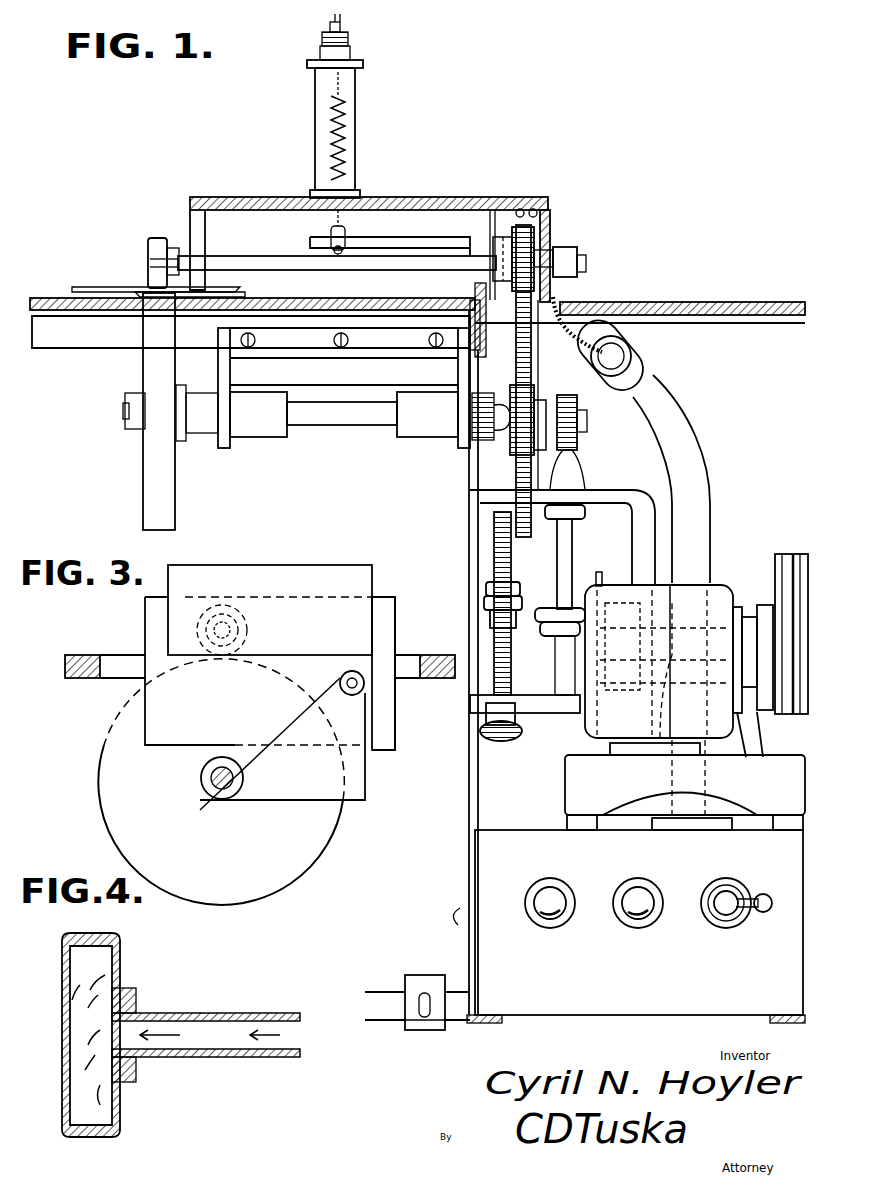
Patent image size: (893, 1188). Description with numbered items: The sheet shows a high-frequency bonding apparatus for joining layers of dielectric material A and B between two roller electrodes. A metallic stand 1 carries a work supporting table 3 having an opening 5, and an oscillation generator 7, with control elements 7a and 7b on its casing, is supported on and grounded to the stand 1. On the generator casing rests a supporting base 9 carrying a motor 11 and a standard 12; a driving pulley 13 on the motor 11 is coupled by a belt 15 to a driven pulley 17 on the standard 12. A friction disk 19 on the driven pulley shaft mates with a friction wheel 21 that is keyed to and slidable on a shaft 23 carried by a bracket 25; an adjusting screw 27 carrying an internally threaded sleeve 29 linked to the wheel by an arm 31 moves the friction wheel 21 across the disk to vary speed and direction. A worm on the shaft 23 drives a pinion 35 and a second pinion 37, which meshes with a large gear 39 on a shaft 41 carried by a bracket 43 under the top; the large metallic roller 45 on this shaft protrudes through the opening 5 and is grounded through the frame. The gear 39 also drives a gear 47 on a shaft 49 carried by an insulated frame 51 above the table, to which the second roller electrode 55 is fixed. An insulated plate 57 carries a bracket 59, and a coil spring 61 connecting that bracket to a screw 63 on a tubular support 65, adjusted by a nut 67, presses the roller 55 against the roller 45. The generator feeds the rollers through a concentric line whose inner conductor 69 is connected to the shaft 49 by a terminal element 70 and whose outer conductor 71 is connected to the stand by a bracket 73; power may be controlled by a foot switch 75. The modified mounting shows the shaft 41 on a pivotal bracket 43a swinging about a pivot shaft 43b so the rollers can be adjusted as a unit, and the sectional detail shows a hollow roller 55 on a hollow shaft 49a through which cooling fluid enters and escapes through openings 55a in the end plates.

In FIG. 1, the metallic stand 1 is at (470, 816).
In FIG. 3, the metallic stand 1 is at (388, 700).
In FIG. 1, the work supporting table 3 is at (38, 298).
In FIG. 3, the work supporting table 3 is at (75, 680).
In FIG. 1, the opening 5 is at (130, 328).
In FIG. 3, the opening 5 is at (118, 677).
In FIG. 1, the oscillation generator 7 is at (607, 1000).
In FIG. 1, the control element 7a is at (548, 928).
In FIG. 1, the control element 7b is at (636, 928).
In FIG. 1, the supporting base 9 is at (565, 798).
In FIG. 1, the motor 11 is at (610, 730).
In FIG. 1, the standard 12 is at (744, 752).
In FIG. 1, the driving pulley 13 is at (750, 722).
In FIG. 1, the belt 15 is at (793, 554).
In FIG. 1, the driven pulley 17 is at (776, 565).
In FIG. 1, the friction disk 19 is at (604, 573).
In FIG. 1, the friction wheel 21 is at (548, 640).
In FIG. 1, the shaft 23 is at (555, 573).
In FIG. 1, the bracket 25 is at (592, 498).
In FIG. 1, the adjusting screw 27 is at (503, 745).
In FIG. 1, the internally threaded sleeve 29 is at (484, 602).
In FIG. 1, the arm 31 is at (490, 570).
In FIG. 1, the pinion 35 is at (585, 418).
In FIG. 1, the second pinion 37 is at (513, 462).
In FIG. 1, the large gear 39 is at (527, 352).
In FIG. 1, the shaft 41 is at (333, 425).
In FIG. 3, the shaft 41 is at (213, 795).
In FIG. 1, the bracket 43 is at (228, 375).
In FIG. 3, the bracket 43a is at (360, 775).
In FIG. 3, the pivot shaft 43b is at (318, 680).
In FIG. 1, the roller 45 is at (143, 470).
In FIG. 3, the roller 45 is at (100, 790).
In FIG. 1, the gear 47 is at (540, 225).
In FIG. 1, the shaft 49 is at (337, 273).
In FIG. 4, the hollow shaft 49a is at (195, 1012).
In FIG. 1, the insulated frame 51 is at (430, 200).
In FIG. 3, the insulated frame 51 is at (330, 575).
In FIG. 1, the second roller electrode 55 is at (157, 237).
In FIG. 3, the second roller electrode 55 is at (250, 628).
In FIG. 4, the second roller electrode 55 is at (120, 945).
In FIG. 4, the openings 55a is at (120, 970).
In FIG. 1, the insulated plate 57 is at (475, 282).
In FIG. 3, the insulated plate 57 is at (150, 630).
In FIG. 1, the bracket 59 is at (312, 237).
In FIG. 1, the coil spring 61 is at (340, 125).
In FIG. 1, the screw 63 is at (335, 28).
In FIG. 1, the tubular support 65 is at (315, 90).
In FIG. 1, the nut 67 is at (355, 42).
In FIG. 1, the inner conductor 69 is at (570, 315).
In FIG. 1, the terminal element 70 is at (570, 245).
In FIG. 1, the outer conductor 71 is at (700, 450).
In FIG. 1, the bracket 73 is at (632, 338).
In FIG. 1, the foot switch 75 is at (408, 988).
In FIG. 1, the layer of dielectric material A is at (100, 286).
In FIG. 1, the layer of dielectric material B is at (242, 295).